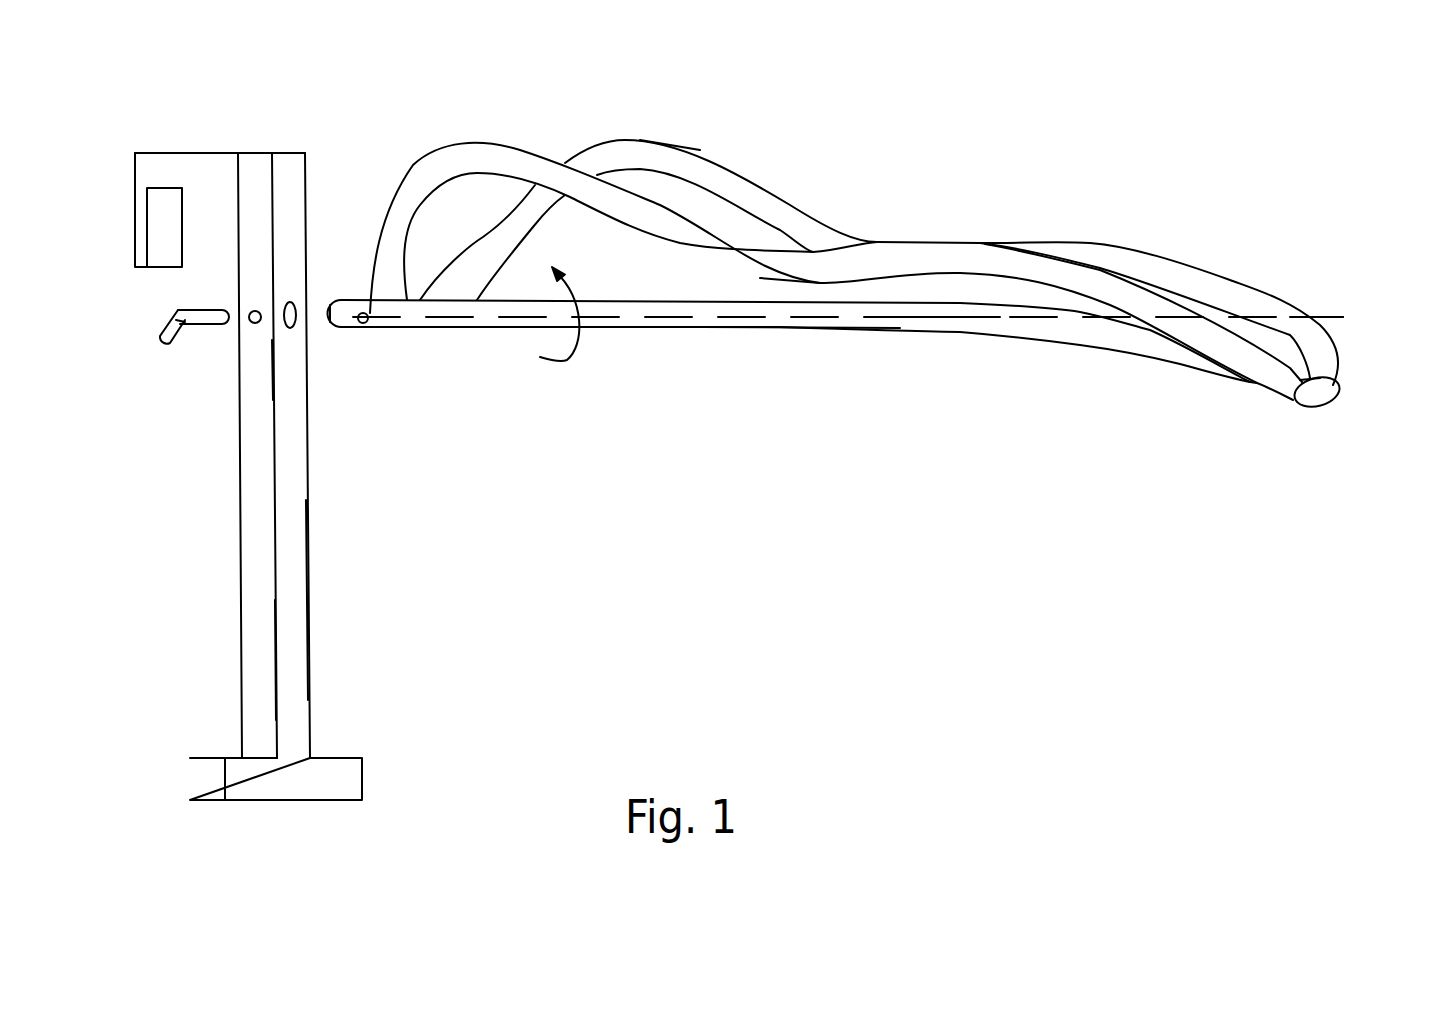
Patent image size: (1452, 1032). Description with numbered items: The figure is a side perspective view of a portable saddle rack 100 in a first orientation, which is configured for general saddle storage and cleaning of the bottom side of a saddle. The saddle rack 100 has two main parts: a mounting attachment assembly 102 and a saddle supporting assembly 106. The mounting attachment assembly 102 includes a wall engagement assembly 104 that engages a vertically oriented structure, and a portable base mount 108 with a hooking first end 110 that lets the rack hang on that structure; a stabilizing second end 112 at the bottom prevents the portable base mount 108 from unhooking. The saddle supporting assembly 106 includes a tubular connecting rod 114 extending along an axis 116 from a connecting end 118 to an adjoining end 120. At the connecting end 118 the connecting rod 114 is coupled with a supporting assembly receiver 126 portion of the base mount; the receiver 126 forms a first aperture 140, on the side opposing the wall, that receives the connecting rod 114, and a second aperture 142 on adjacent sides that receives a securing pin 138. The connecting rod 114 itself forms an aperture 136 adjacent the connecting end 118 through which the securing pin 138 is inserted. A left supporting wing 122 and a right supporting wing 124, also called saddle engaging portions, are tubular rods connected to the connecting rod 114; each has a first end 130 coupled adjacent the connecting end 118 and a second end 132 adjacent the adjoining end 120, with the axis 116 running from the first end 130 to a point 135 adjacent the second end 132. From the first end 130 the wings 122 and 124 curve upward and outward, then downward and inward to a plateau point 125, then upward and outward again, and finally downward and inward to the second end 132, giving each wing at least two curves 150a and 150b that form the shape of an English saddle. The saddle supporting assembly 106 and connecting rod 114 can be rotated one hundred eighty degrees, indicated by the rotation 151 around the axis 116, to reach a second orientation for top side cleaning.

The saddle rack 100 is at (749, 451).
The mounting attachment assembly 102 is at (291, 458).
The wall engagement assembly 104 is at (310, 578).
The saddle supporting assembly 106 is at (800, 340).
The portable base mount 108 is at (305, 665).
The hooking first end 110 is at (147, 173).
The stabilizing second end 112 is at (345, 772).
The connecting rod 114 is at (881, 332).
The axis 116 is at (928, 318).
The connecting end 118 is at (333, 328).
The adjoining end 120 is at (1355, 389).
The left supporting wing 122 is at (813, 242).
The right supporting wing 124 is at (673, 158).
The plateau point 125 is at (811, 258).
The supporting assembly receiver 126 is at (280, 348).
The first end 130 is at (405, 318).
The second end 132 is at (1317, 374).
The point 135 is at (1330, 318).
The aperture 136 is at (365, 313).
The securing pin 138 is at (155, 342).
The first aperture 140 is at (288, 328).
The second aperture 142 is at (250, 312).
The curve 150a is at (951, 243).
The curve 150b is at (1010, 262).
The rotation 151 is at (563, 362).